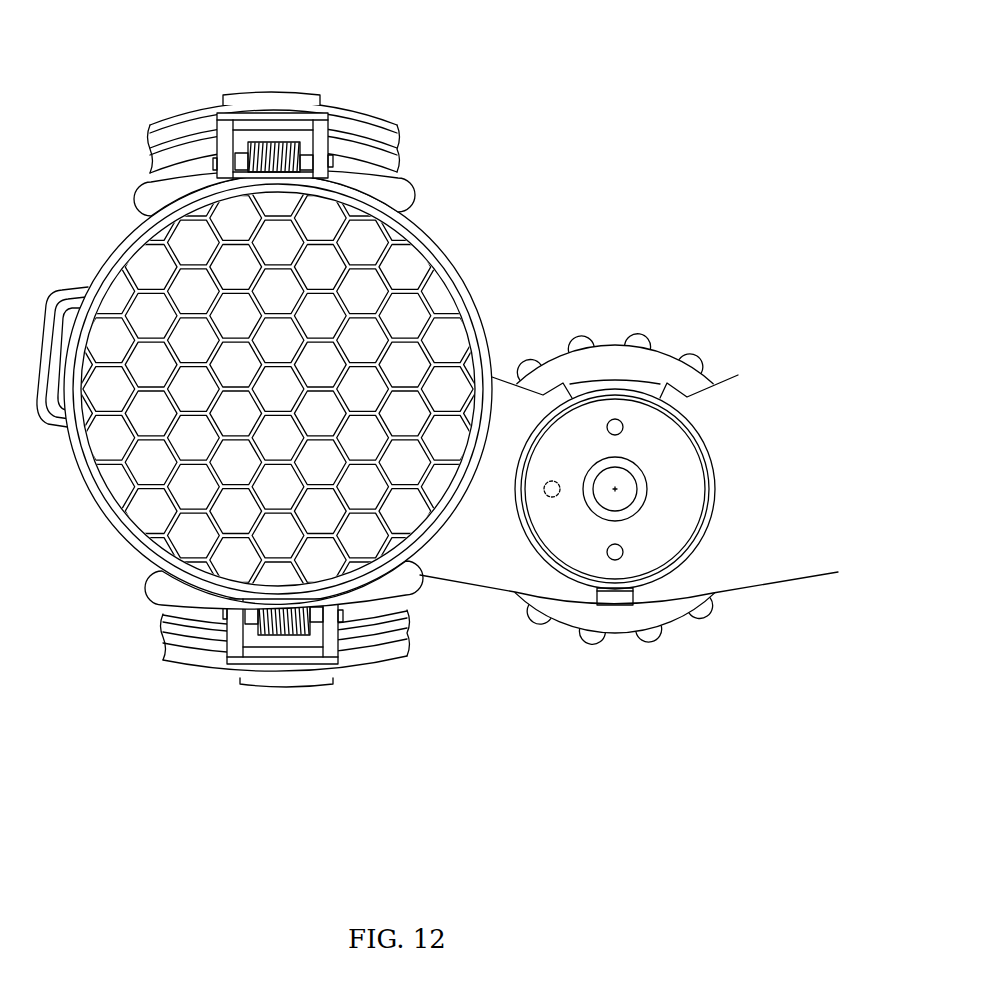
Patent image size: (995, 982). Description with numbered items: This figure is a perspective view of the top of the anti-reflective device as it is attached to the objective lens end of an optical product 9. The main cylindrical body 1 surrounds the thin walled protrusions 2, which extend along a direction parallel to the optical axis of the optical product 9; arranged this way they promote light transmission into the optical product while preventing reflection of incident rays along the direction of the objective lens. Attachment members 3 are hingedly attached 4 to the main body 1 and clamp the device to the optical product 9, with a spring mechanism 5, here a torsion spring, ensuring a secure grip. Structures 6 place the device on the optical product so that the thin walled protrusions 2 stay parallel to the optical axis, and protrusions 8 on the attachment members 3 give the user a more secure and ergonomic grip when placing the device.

The main cylindrical body 1 is at (122, 255).
The thin walled protrusions 2 is at (393, 338).
The attachment members 3 is at (173, 665).
The hinged attachment 4 is at (345, 153).
The spring mechanism 5 is at (293, 155).
The placement structures 6 is at (170, 593).
The protrusions 8 is at (248, 93).
The optical product 9 is at (727, 552).